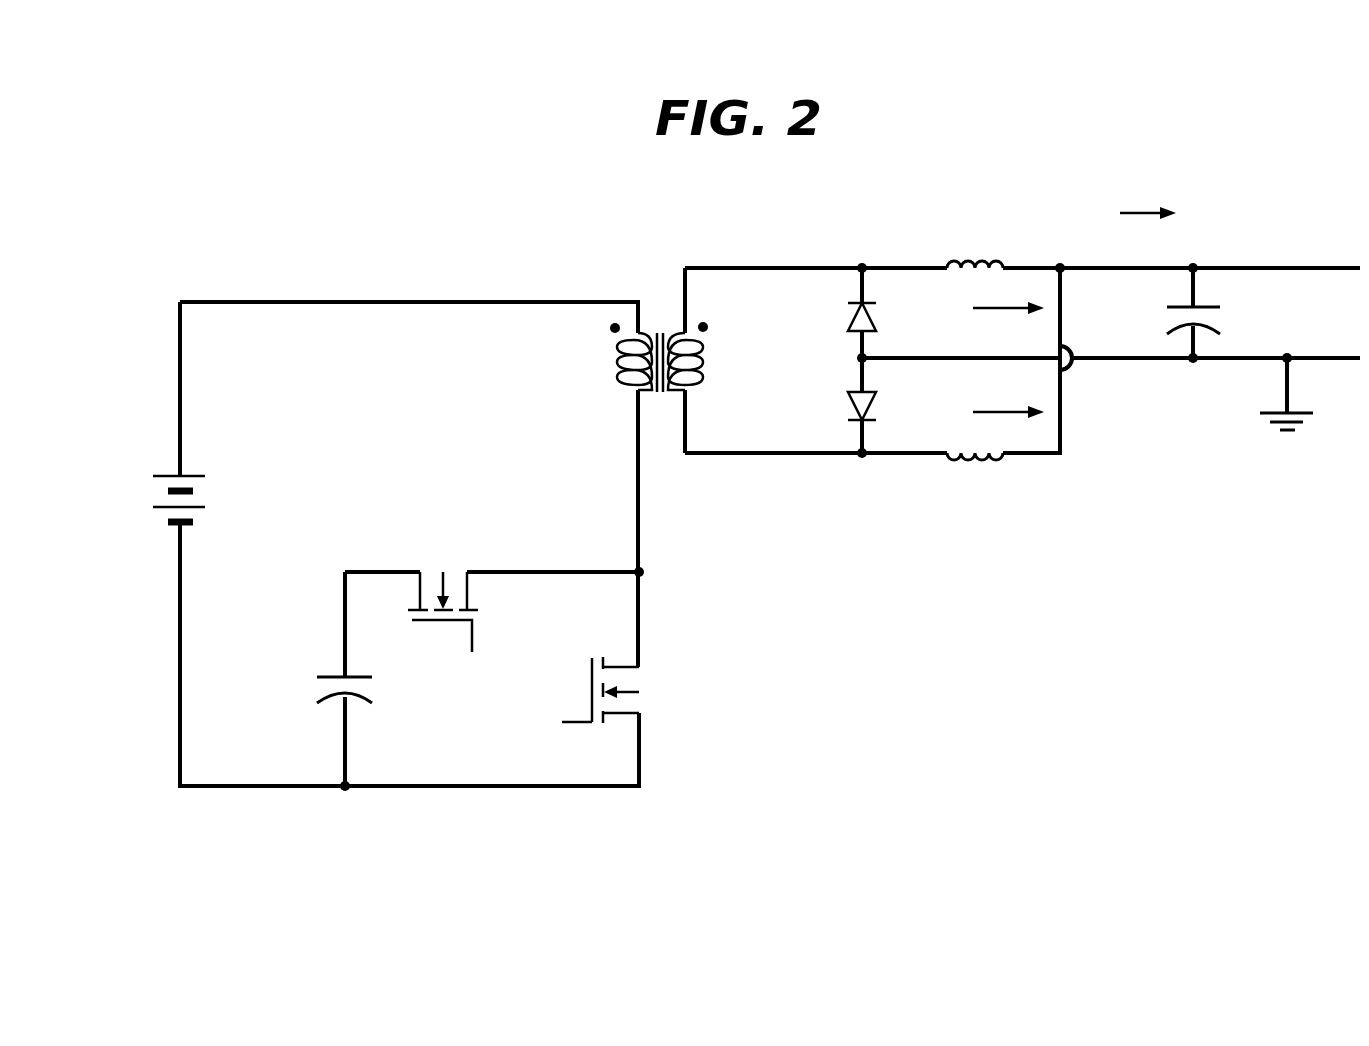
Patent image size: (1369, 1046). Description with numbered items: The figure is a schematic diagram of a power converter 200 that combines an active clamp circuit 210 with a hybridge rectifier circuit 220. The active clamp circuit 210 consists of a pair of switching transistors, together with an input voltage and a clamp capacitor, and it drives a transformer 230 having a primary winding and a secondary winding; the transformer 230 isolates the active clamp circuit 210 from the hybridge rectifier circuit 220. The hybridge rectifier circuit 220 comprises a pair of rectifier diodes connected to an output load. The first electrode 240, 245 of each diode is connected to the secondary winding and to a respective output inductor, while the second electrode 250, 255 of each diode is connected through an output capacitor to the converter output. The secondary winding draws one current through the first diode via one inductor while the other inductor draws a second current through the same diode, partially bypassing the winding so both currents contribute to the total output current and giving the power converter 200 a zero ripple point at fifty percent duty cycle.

The power converter 200 is at (718, 838).
The active clamp circuit 210 is at (425, 290).
The hybridge rectifier circuit 220 is at (1025, 238).
The transformer 230 is at (657, 298).
The first electrode 240 is at (855, 298).
The first electrode 245 is at (858, 446).
The second electrode 250 is at (858, 334).
The second electrode 255 is at (858, 392).